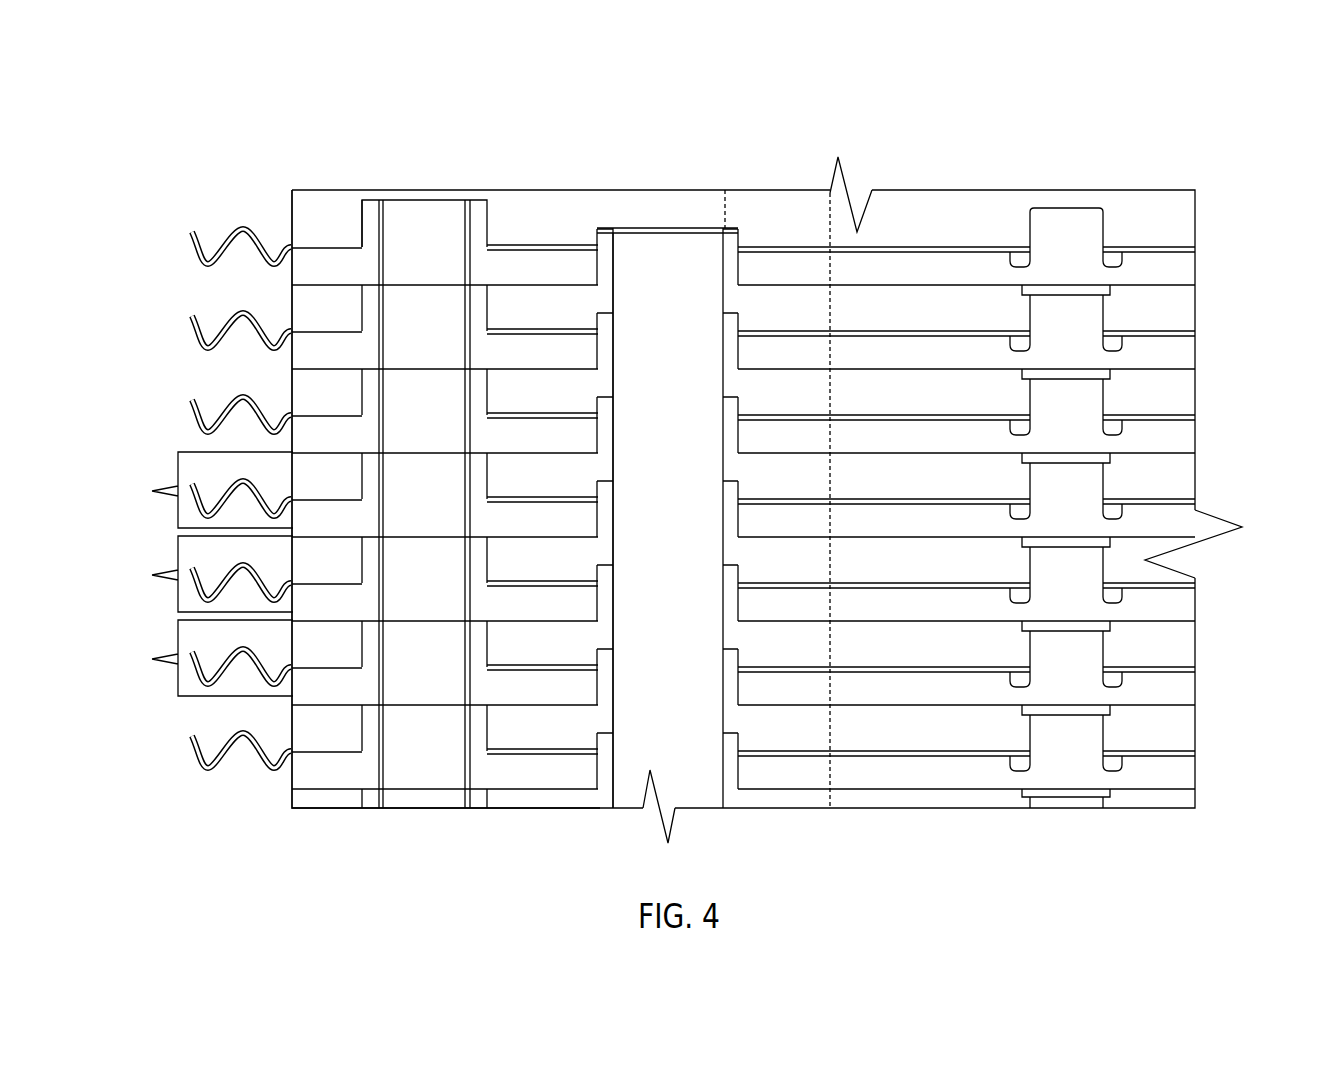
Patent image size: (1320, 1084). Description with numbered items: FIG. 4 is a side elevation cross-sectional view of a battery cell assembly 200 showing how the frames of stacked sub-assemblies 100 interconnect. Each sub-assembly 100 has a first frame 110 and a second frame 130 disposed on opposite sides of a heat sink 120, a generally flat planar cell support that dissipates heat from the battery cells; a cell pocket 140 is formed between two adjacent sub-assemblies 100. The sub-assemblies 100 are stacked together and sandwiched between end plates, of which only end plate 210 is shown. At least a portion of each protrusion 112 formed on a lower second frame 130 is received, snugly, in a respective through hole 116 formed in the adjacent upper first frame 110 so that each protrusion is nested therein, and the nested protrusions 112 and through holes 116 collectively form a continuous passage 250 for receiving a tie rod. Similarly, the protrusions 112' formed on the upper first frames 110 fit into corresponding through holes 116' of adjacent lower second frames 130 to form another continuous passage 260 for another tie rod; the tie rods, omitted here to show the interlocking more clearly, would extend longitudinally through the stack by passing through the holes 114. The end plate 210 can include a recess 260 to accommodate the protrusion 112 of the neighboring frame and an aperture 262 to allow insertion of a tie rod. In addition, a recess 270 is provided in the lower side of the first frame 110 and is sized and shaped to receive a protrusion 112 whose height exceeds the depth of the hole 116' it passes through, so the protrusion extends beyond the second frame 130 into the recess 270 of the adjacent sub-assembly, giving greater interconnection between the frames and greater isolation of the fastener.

The sub-assembly 100 is at (204, 574).
The first frame 110 is at (1202, 560).
The protrusion 112 is at (509, 497).
The protrusion 112' is at (646, 474).
The hole 114 is at (432, 253).
The hole 116 is at (297, 257).
The hole 116' is at (561, 504).
The heat sink 120 is at (323, 330).
The second frame 130 is at (1200, 521).
The cell pocket 140 is at (905, 246).
The battery cell assembly 200 is at (1207, 160).
The end plate 210 is at (935, 215).
The continuous passage 250 is at (422, 812).
The continuous passage 260 is at (693, 780).
The aperture 262 is at (460, 194).
The recess 270 is at (600, 650).